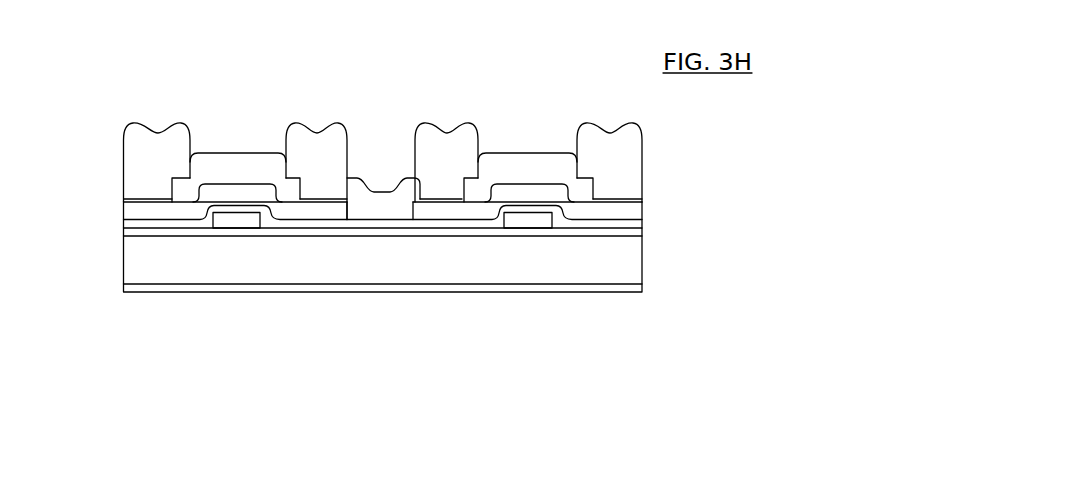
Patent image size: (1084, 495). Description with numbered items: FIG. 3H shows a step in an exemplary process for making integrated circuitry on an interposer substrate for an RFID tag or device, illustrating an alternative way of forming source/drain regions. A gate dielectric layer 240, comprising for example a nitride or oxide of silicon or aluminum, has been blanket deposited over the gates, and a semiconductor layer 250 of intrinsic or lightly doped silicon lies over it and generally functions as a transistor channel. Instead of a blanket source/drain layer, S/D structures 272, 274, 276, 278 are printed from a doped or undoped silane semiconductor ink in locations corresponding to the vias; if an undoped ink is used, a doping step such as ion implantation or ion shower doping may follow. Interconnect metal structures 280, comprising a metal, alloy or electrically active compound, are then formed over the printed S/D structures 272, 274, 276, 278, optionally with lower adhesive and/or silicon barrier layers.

The gate dielectric layer 240 is at (123, 223).
The semiconductor layer 250 is at (642, 208).
The S/D structure 272 is at (150, 210).
The S/D structure 274 is at (323, 208).
The S/D structure 276 is at (442, 208).
The S/D structure 278 is at (617, 207).
The interconnect metal structure 280 is at (124, 153).